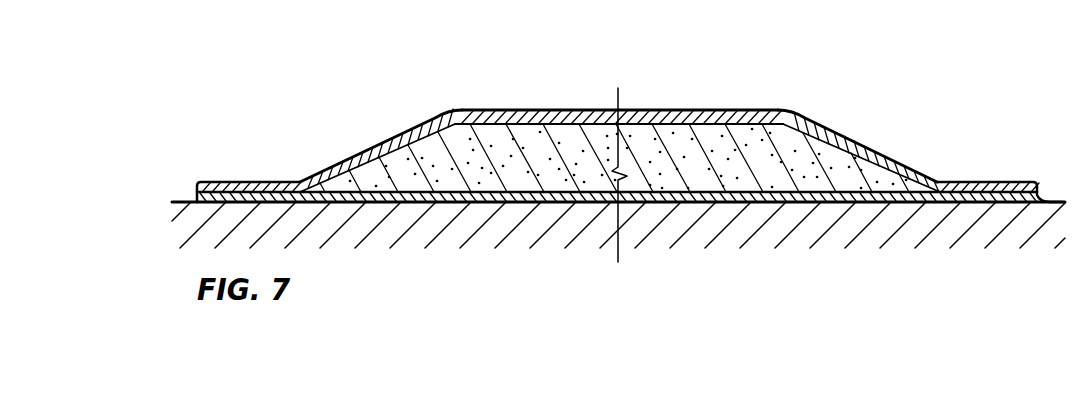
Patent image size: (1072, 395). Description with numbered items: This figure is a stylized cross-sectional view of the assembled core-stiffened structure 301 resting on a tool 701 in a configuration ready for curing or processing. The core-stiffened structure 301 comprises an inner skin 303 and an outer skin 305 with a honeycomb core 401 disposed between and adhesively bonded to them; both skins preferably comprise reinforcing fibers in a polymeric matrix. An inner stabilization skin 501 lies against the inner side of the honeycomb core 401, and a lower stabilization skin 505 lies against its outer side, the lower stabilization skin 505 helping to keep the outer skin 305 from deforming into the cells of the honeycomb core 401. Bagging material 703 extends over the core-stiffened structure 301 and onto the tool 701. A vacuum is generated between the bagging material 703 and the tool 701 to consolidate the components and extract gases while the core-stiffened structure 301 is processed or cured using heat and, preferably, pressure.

The core-stiffened structure 301 is at (848, 126).
The inner skin 303 is at (685, 110).
The outer skin 305 is at (787, 202).
The honeycomb core 401 is at (557, 169).
The inner stabilization skin 501 is at (424, 123).
The lower stabilization skin 505 is at (462, 201).
The tool 701 is at (947, 230).
The bagging material 703 is at (191, 202).